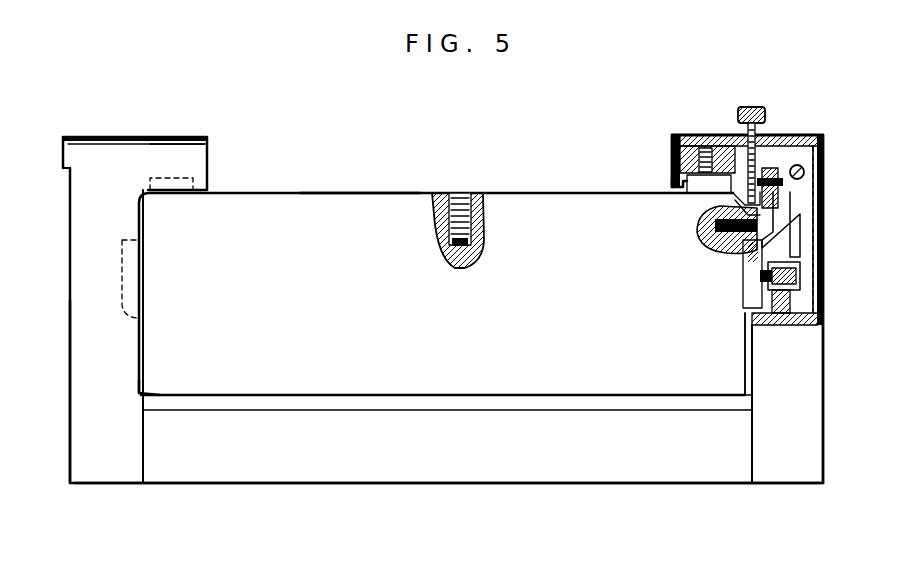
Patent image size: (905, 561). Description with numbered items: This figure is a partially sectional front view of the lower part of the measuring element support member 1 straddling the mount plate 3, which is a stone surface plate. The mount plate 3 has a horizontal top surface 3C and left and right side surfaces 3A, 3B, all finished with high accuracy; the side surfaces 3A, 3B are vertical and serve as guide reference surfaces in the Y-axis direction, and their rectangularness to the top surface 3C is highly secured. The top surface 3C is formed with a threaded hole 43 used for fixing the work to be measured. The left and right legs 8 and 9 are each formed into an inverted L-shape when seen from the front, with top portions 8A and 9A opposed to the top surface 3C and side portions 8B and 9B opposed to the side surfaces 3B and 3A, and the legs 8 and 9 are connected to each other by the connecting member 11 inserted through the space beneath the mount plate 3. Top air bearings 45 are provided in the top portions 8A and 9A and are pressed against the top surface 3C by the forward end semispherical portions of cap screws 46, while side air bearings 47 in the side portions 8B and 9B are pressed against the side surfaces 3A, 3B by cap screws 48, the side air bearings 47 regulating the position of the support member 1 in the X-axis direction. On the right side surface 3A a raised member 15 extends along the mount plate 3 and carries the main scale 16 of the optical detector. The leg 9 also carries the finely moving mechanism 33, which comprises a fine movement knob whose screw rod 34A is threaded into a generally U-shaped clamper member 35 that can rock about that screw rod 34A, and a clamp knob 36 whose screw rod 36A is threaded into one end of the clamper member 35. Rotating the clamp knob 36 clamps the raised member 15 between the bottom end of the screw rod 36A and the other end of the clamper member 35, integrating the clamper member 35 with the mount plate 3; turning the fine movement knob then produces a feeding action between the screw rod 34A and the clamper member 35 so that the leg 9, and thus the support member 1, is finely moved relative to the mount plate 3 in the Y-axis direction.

The measuring element support member 1 is at (82, 371).
The mount plate 3 is at (546, 196).
The right side surface 3A is at (745, 358).
The left side surface 3B is at (141, 385).
The top surface 3C is at (357, 196).
The left leg 8 is at (75, 195).
The top portion of left leg 8A is at (172, 148).
The side portion of left leg 8B is at (86, 321).
The right leg 9 is at (808, 247).
The top portion of right leg 9A is at (737, 137).
The side portion of right leg 9B is at (806, 304).
The connecting member 11 is at (460, 476).
The raised member 15 is at (736, 205).
The main scale 16 is at (720, 237).
The finely moving mechanism 33 is at (822, 192).
The screw rod of fine movement knob 34A is at (818, 173).
The clamper member 35 is at (802, 204).
The clamp knob 36 is at (752, 107).
The screw rod of clamp knob 36A is at (786, 136).
The threaded hole 43 is at (461, 194).
The top air bearing 45 is at (181, 178).
The cap screw 46 is at (702, 135).
The side air bearing 47 is at (147, 321).
The cap screw 48 is at (798, 274).